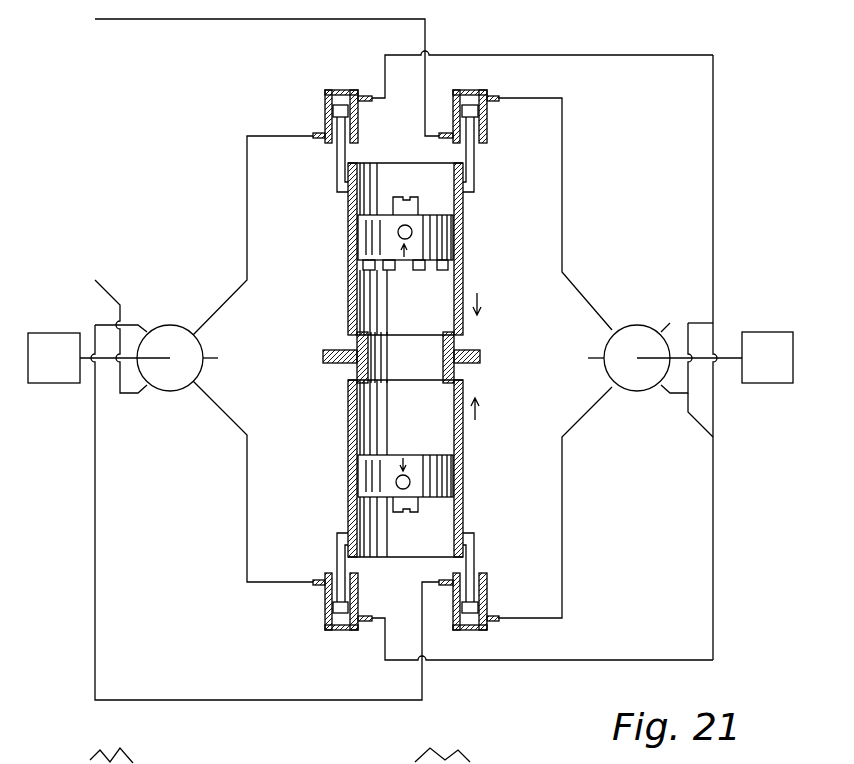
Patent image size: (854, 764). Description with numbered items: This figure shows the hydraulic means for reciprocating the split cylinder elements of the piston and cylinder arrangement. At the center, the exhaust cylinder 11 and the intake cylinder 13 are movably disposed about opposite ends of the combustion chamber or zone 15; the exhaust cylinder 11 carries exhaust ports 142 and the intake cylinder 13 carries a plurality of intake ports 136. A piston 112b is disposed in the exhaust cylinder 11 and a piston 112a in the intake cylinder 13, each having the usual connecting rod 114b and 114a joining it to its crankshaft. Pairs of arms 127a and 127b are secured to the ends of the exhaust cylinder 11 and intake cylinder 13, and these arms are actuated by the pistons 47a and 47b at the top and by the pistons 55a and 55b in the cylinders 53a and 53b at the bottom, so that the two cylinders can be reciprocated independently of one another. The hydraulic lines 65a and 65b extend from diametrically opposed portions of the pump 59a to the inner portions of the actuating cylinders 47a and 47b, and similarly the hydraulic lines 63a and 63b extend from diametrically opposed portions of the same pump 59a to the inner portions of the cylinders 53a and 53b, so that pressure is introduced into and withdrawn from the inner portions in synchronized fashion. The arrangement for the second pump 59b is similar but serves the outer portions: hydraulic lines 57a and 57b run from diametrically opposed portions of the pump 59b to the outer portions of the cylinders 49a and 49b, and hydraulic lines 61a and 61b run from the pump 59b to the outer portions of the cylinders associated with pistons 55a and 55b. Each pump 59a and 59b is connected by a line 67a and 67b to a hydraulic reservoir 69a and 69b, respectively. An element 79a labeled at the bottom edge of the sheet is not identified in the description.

The exhaust cylinder 11 is at (462, 285).
The intake cylinder 13 is at (462, 432).
The combustion chamber or zone 15 is at (465, 355).
The piston 47a is at (341, 104).
The piston 47b is at (468, 104).
The cylinder 49a is at (325, 120).
The cylinder 49b is at (487, 134).
The cylinder 53a is at (324, 598).
The cylinder 53b is at (485, 580).
The piston 55a is at (333, 606).
The piston 55b is at (468, 615).
The hydraulic line 57a is at (384, 62).
The hydraulic line 57b is at (562, 213).
The pump 59a is at (170, 393).
The pump 59b is at (636, 325).
The hydraulic line 61a is at (382, 651).
The hydraulic line 61b is at (562, 470).
The hydraulic line 63a is at (247, 527).
The hydraulic line 63b is at (425, 683).
The hydraulic line 65a is at (247, 232).
The hydraulic line 65b is at (97, 200).
The line 67a is at (107, 352).
The line 67b is at (699, 356).
The hydraulic reservoir 69a is at (56, 387).
The hydraulic reservoir 69b is at (762, 384).
The element of adjacent figure 79a is at (133, 763).
The piston 112a is at (372, 484).
The piston 112b is at (372, 243).
The connecting rod 114a is at (405, 512).
The connecting rod 114b is at (408, 203).
The arm 127a is at (338, 161).
The arm 127b is at (472, 152).
The intake ports 136 is at (460, 466).
The exhaust ports 142 is at (462, 243).